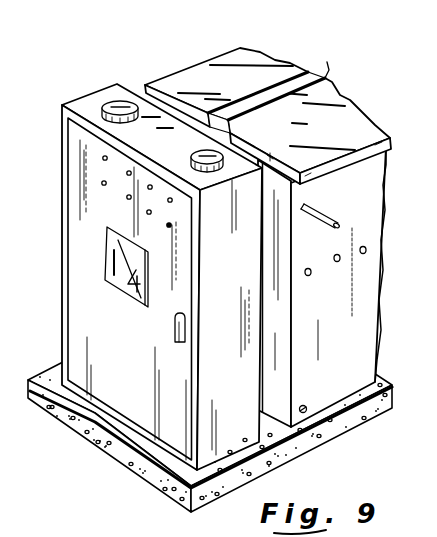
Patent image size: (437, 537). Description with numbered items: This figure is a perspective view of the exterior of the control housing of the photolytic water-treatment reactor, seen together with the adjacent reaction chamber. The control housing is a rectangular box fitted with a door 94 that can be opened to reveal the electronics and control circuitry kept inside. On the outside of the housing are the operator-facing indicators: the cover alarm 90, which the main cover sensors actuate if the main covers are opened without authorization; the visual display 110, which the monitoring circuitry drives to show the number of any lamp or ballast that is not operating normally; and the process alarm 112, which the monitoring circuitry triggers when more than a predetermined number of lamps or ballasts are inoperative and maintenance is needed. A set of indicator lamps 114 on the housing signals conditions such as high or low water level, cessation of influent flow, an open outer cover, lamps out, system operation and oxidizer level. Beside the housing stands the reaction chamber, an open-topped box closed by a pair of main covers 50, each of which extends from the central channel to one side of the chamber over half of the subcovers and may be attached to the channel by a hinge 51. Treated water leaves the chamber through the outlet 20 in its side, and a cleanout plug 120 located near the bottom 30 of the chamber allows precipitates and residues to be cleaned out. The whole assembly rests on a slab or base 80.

The outlet 20 is at (335, 225).
The bottom 30 is at (4, 464).
The main cover 50 is at (218, 66).
The hinge 51 is at (320, 74).
The concrete slab 80 is at (196, 407).
The cover alarm 90 is at (117, 103).
The door 94 is at (80, 294).
The visual display 110 is at (128, 283).
The process alarm 112 is at (281, 130).
The indicator lamps 114 is at (103, 159).
The cleanout plug 120 is at (307, 411).